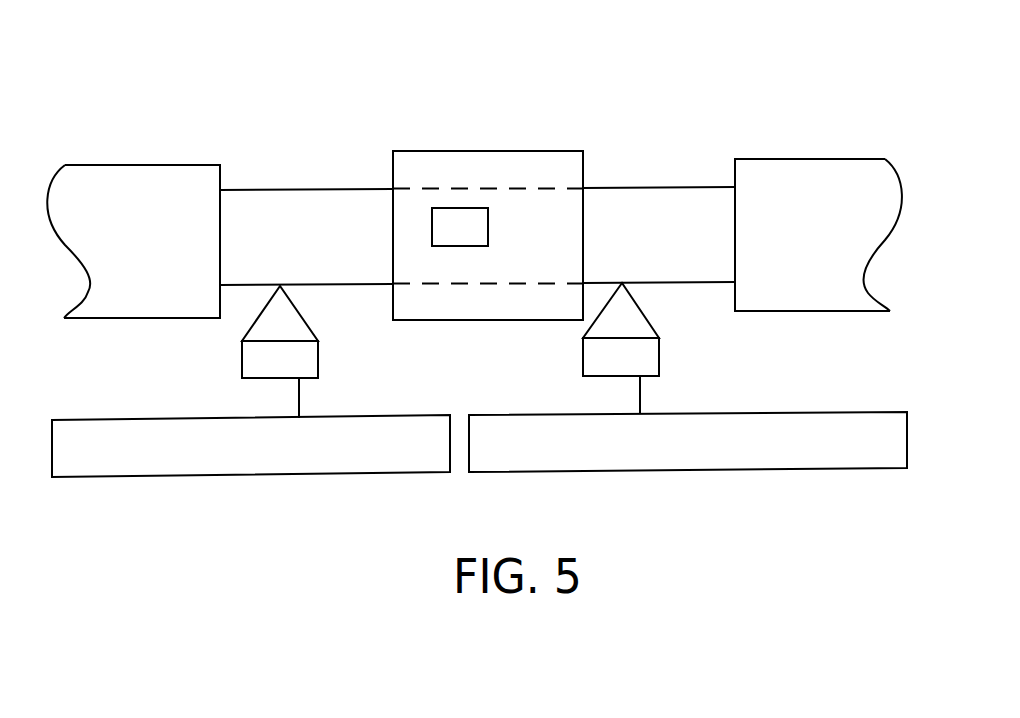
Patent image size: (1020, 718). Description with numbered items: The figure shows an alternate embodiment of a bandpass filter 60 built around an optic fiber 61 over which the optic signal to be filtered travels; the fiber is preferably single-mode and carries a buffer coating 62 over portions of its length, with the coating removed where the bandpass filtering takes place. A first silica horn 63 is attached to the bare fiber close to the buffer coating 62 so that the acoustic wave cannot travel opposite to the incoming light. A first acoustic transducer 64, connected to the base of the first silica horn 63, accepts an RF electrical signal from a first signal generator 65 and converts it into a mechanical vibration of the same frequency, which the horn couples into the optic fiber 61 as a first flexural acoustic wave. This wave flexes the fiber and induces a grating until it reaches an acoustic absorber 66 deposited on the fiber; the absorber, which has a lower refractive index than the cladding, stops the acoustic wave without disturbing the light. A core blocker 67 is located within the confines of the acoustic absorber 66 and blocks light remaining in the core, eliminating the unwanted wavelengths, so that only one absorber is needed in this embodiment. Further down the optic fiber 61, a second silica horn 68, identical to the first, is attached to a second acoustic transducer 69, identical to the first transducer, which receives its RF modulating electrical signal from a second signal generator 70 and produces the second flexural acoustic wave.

The bandpass filter 60 is at (635, 83).
The optic fiber 61 is at (279, 190).
The buffer coating 62 is at (143, 165).
The first silica horn 63 is at (298, 322).
The first acoustic transducer 64 is at (318, 359).
The first signal generator 65 is at (166, 418).
The acoustic absorber 66 is at (449, 151).
The core blocker 67 is at (488, 226).
The second silica horn 68 is at (638, 319).
The second acoustic transducer 69 is at (659, 357).
The second signal generator 70 is at (773, 413).